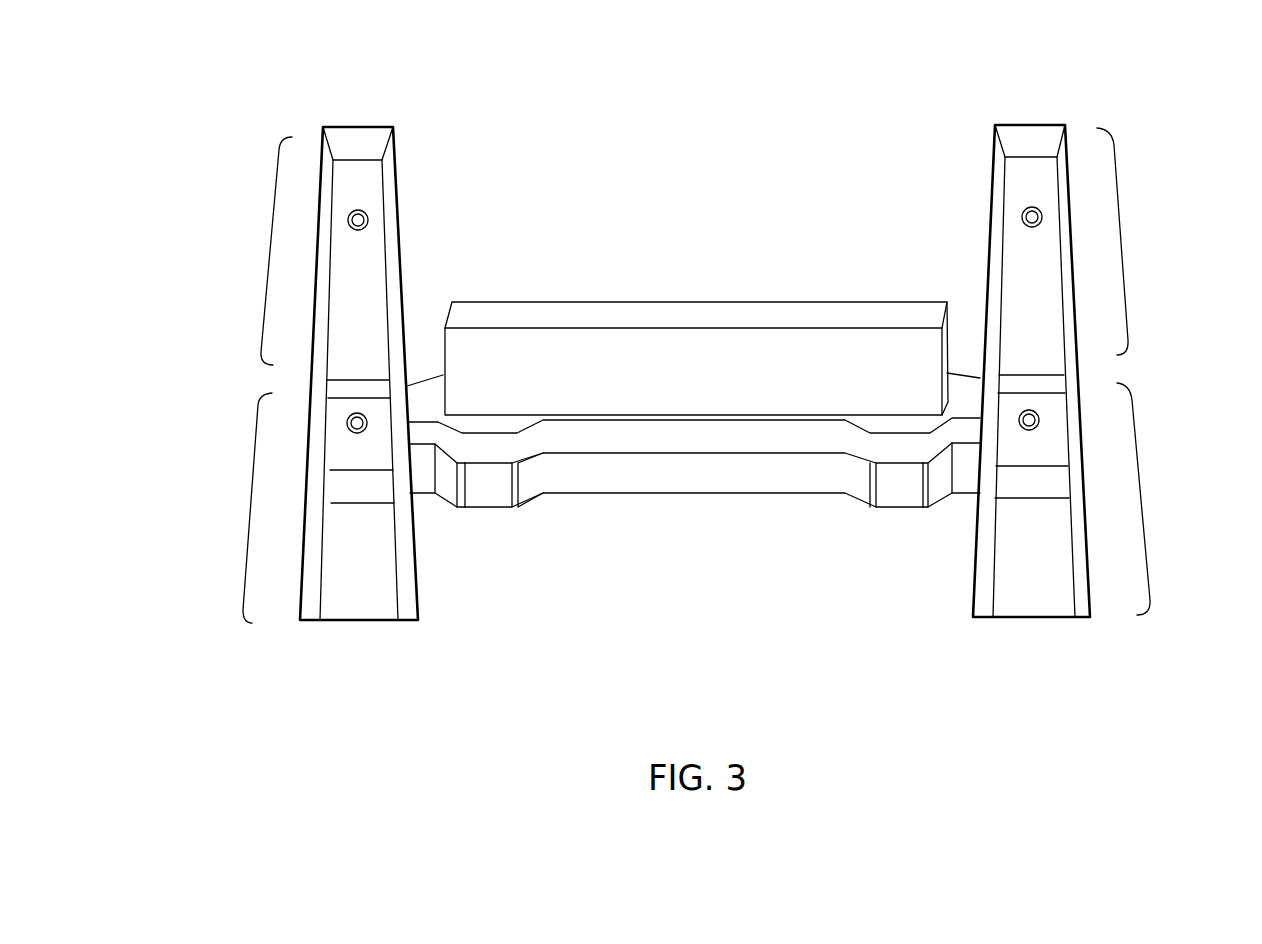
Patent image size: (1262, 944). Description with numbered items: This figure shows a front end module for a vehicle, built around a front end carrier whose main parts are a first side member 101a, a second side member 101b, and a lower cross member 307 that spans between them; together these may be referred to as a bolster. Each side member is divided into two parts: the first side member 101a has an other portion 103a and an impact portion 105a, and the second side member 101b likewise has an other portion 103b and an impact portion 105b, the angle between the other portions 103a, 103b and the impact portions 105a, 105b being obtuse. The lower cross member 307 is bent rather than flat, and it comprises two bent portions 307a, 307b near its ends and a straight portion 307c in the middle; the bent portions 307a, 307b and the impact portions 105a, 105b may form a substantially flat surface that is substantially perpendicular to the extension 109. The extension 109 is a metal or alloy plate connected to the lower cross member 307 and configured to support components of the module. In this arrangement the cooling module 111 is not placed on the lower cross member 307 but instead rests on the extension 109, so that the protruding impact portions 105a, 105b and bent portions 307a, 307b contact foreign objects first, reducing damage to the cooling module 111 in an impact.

The first side member 101a is at (340, 101).
The second side member 101b is at (1040, 88).
The other portion 103a is at (265, 248).
The other portion 103b is at (1123, 242).
The impact portion 105a is at (245, 507).
The impact portion 105b is at (1143, 498).
The extension 109 is at (415, 397).
The cooling module 111 is at (752, 360).
The lower cross member 307 is at (694, 544).
The bent portion 307a is at (490, 485).
The bent portion 307b is at (915, 510).
The straight portion 307c is at (753, 475).